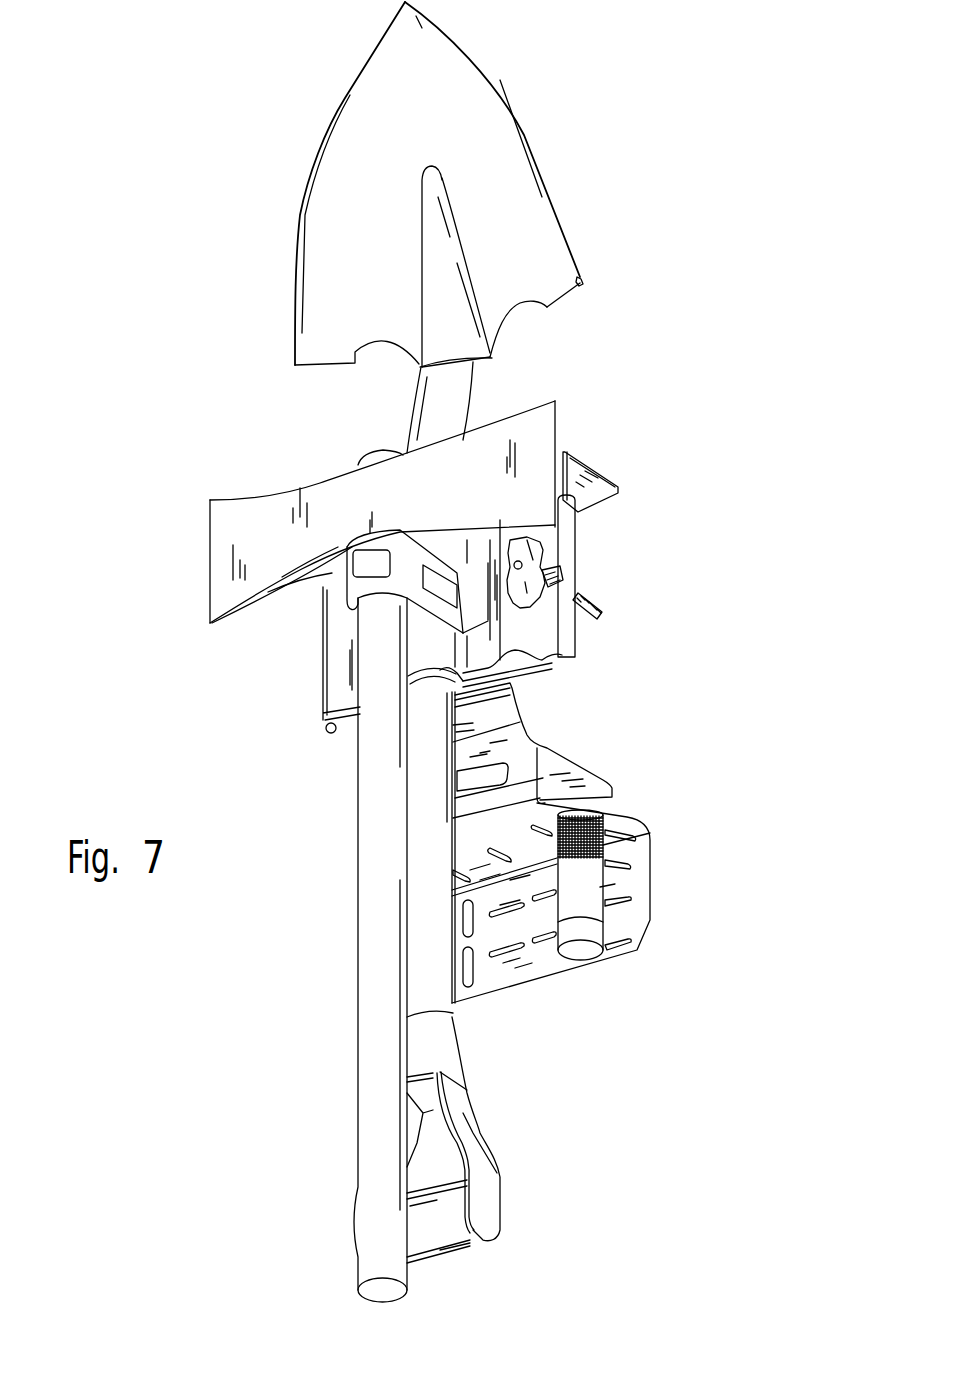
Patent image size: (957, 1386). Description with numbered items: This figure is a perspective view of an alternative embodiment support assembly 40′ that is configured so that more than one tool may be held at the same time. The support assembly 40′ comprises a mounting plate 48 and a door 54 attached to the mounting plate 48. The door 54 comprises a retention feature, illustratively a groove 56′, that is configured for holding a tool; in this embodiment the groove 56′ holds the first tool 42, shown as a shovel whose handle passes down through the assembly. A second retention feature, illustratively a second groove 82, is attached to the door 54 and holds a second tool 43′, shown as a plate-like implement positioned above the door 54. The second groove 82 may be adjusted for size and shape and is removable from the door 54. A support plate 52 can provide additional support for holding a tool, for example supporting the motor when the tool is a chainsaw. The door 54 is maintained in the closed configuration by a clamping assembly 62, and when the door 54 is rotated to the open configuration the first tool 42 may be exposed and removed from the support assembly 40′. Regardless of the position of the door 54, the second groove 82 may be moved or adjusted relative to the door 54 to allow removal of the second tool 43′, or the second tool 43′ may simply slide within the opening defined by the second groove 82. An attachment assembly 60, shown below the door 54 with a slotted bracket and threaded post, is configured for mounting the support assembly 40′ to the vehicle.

The first tool 42 is at (353, 155).
The second tool 43′ is at (230, 527).
The support assembly 40′ is at (742, 472).
The second groove 82 is at (328, 587).
The groove 56′ is at (413, 645).
The support plate 52 is at (590, 463).
The door 54 is at (543, 625).
The clamping assembly 62 is at (545, 568).
The mounting plate 48 is at (547, 668).
The attachment assembly 60 is at (658, 812).